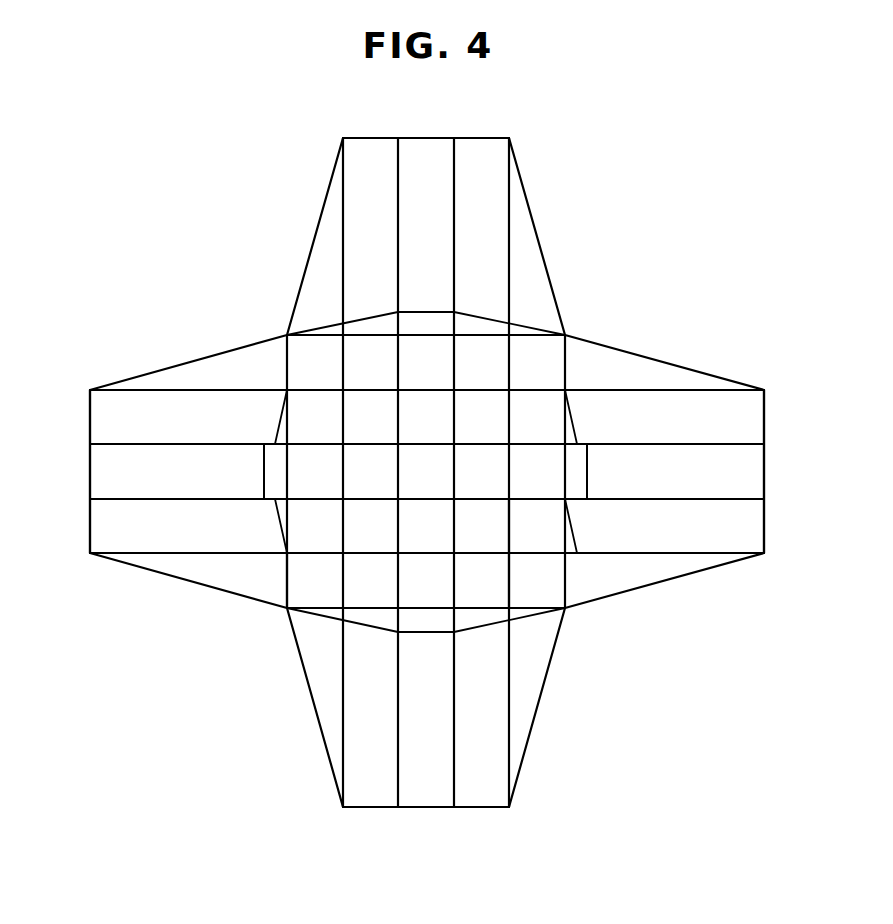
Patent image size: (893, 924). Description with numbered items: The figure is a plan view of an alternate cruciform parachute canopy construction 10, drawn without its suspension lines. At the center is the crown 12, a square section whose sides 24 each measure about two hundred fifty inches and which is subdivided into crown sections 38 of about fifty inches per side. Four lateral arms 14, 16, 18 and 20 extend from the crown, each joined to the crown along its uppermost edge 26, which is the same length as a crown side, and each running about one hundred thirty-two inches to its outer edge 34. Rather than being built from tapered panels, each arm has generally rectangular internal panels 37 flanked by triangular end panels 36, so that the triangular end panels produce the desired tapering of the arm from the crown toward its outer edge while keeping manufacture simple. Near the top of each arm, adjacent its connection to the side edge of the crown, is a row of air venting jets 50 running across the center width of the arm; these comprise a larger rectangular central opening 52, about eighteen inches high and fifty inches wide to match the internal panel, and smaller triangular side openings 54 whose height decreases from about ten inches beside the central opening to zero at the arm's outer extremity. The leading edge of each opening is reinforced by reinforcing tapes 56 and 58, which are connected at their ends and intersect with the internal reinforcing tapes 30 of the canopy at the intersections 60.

The canopy construction 10 is at (265, 320).
The crown 12 is at (478, 404).
The lateral arm 14 is at (755, 477).
The lateral arm 16 is at (98, 415).
The lateral arm 18 is at (417, 147).
The lateral arm 20 is at (423, 797).
The side of crown 24 is at (563, 343).
The uppermost edge of canopy arm 26 is at (565, 556).
The internal reinforcing tapes 30 is at (313, 598).
The outer edge of arm 34 is at (478, 138).
The end panels 36 is at (683, 375).
The internal panels 37 is at (725, 508).
The crown section 38 is at (540, 588).
The air venting jets 50 is at (263, 472).
The central opening 52 is at (437, 622).
The side openings 54 is at (348, 620).
The reinforcing tape 56 is at (590, 468).
The reinforcing tape 58 is at (560, 467).
The intersection of reinforcing tapes 60 is at (298, 447).